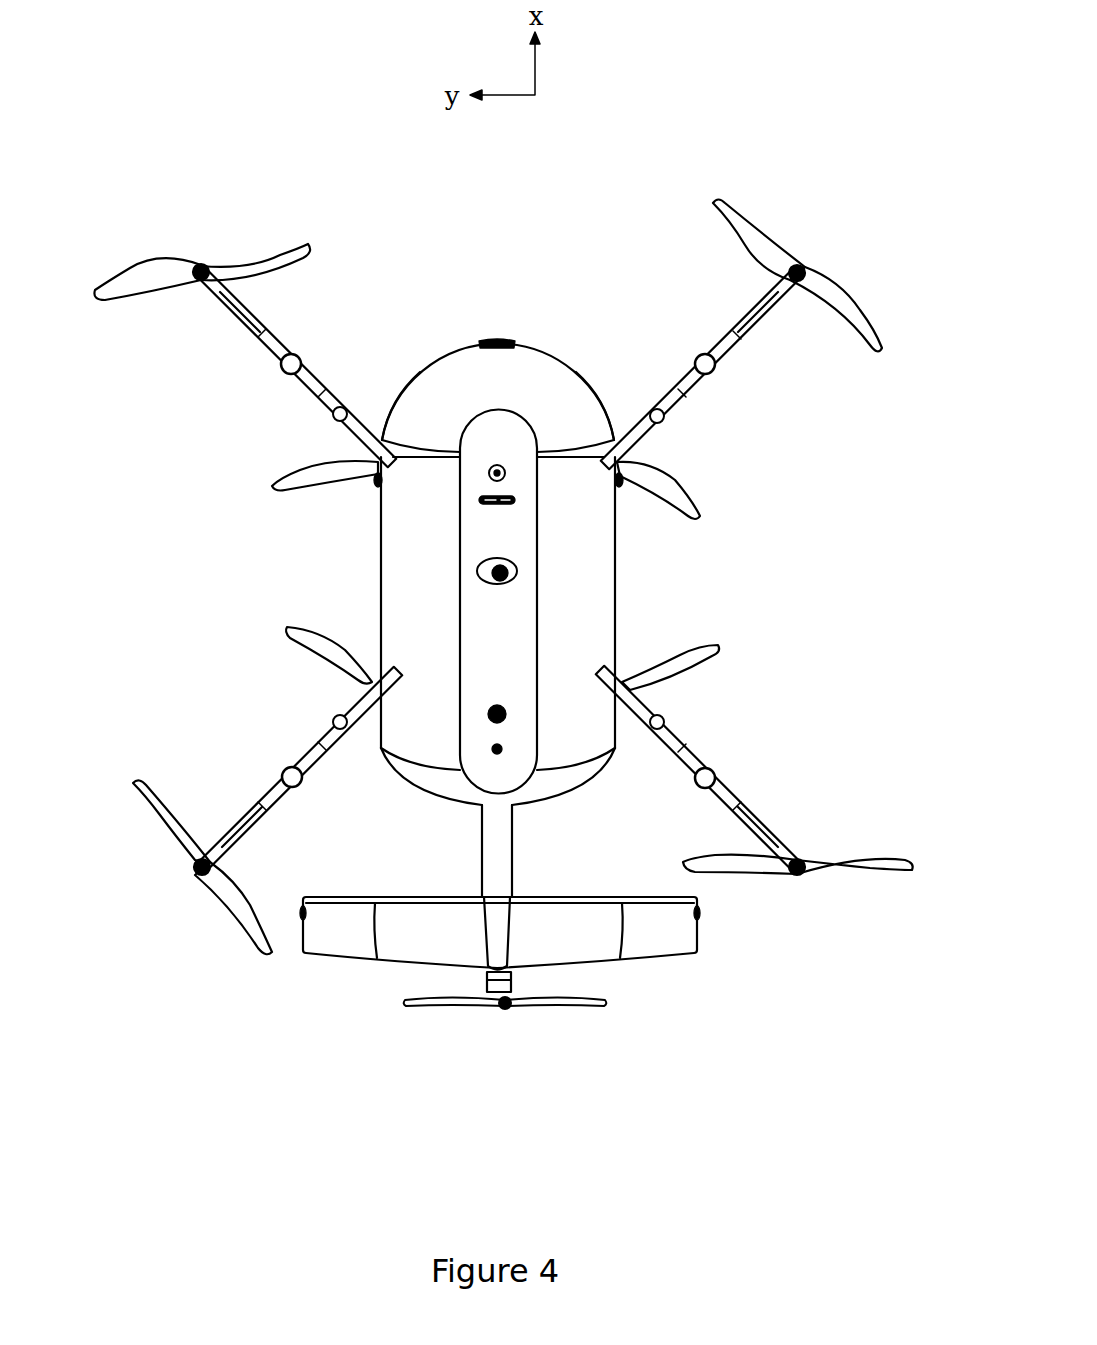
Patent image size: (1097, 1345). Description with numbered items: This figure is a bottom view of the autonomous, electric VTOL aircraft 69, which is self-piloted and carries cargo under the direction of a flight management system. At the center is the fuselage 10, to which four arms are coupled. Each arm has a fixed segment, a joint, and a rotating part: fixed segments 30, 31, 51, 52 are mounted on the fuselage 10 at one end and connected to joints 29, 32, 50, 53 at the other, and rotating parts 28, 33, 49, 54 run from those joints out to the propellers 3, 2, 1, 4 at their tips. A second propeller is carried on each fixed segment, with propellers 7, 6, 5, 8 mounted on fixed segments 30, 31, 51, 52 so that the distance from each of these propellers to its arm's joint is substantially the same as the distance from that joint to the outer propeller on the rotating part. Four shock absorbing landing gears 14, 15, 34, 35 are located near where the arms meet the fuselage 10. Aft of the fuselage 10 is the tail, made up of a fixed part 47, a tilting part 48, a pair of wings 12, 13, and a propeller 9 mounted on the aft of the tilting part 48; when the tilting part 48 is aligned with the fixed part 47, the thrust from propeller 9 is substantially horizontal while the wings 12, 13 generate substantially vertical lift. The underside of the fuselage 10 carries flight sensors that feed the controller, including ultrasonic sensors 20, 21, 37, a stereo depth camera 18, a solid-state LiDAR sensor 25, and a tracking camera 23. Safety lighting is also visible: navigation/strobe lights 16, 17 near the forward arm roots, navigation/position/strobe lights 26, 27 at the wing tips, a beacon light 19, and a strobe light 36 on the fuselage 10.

The propeller 1 is at (235, 905).
The propeller 2 is at (845, 875).
The propeller 3 is at (752, 245).
The propeller 4 is at (150, 280).
The propeller 5 is at (285, 630).
The propeller 6 is at (715, 648).
The propeller 7 is at (700, 512).
The propeller 8 is at (300, 487).
The propeller 9 is at (520, 1008).
The fuselage 10 is at (527, 360).
The wing 12 is at (405, 935).
The wing 13 is at (595, 935).
The shock absorbing landing gear 14 is at (355, 430).
The shock absorbing landing gear 15 is at (640, 434).
The navigation/strobe light 16 is at (372, 488).
The navigation/strobe light 17 is at (625, 495).
The stereo depth camera 18 is at (516, 500).
The beacon light 19 is at (490, 477).
The ultrasonic sensor 20 is at (398, 395).
The ultrasonic sensor 21 is at (600, 398).
The tracking camera 23 is at (483, 338).
The solid-state LiDAR sensor 25 is at (490, 570).
The navigation/position/strobe light 26 is at (301, 910).
The navigation/position/strobe light 27 is at (702, 913).
The rotating part 28 is at (752, 318).
The joint 29 is at (716, 368).
The fixed segment 30 is at (672, 395).
The fixed segment 31 is at (685, 748).
The joint 32 is at (695, 781).
The rotating part 33 is at (752, 815).
The shock absorbing landing gear 34 is at (632, 698).
The shock absorbing landing gear 35 is at (360, 695).
The strobe light 36 is at (492, 708).
The ultrasonic sensor 37 is at (503, 747).
The fixed part 47 is at (497, 848).
The tilting part 48 is at (498, 910).
The rotating part 49 is at (237, 838).
The joint 50 is at (302, 786).
The fixed segment 51 is at (318, 748).
The fixed segment 52 is at (325, 395).
The joint 53 is at (281, 365).
The rotating part 54 is at (232, 315).
The VTOL aircraft 69 is at (687, 150).